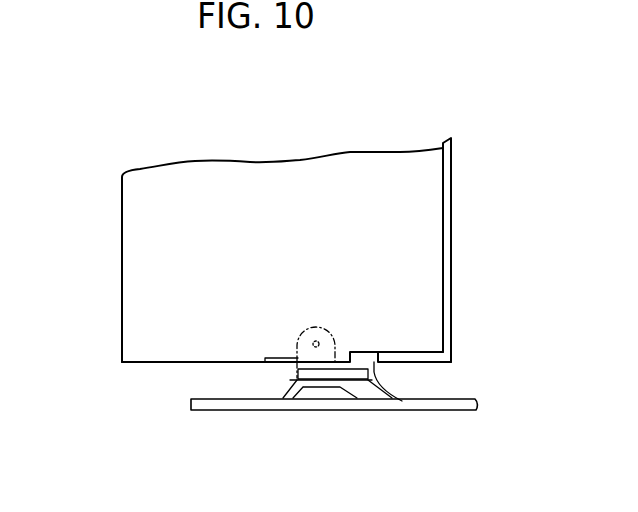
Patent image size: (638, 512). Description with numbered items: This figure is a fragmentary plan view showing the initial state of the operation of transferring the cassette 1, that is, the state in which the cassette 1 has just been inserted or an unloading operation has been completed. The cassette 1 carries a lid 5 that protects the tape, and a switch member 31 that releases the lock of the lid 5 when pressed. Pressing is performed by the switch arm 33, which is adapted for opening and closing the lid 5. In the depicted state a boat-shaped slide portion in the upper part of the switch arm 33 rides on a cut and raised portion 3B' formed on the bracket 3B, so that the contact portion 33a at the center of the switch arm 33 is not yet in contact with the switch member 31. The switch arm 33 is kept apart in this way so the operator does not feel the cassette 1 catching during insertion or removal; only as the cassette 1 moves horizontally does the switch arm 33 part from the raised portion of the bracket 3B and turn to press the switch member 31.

The cassette 1 is at (122, 220).
The lid 5 is at (450, 233).
The switch member 31 is at (373, 363).
The switch arm 33 is at (320, 374).
The contact portion 33a is at (386, 388).
The cut and raised portion 3B' is at (249, 381).
The bracket 3B is at (359, 373).